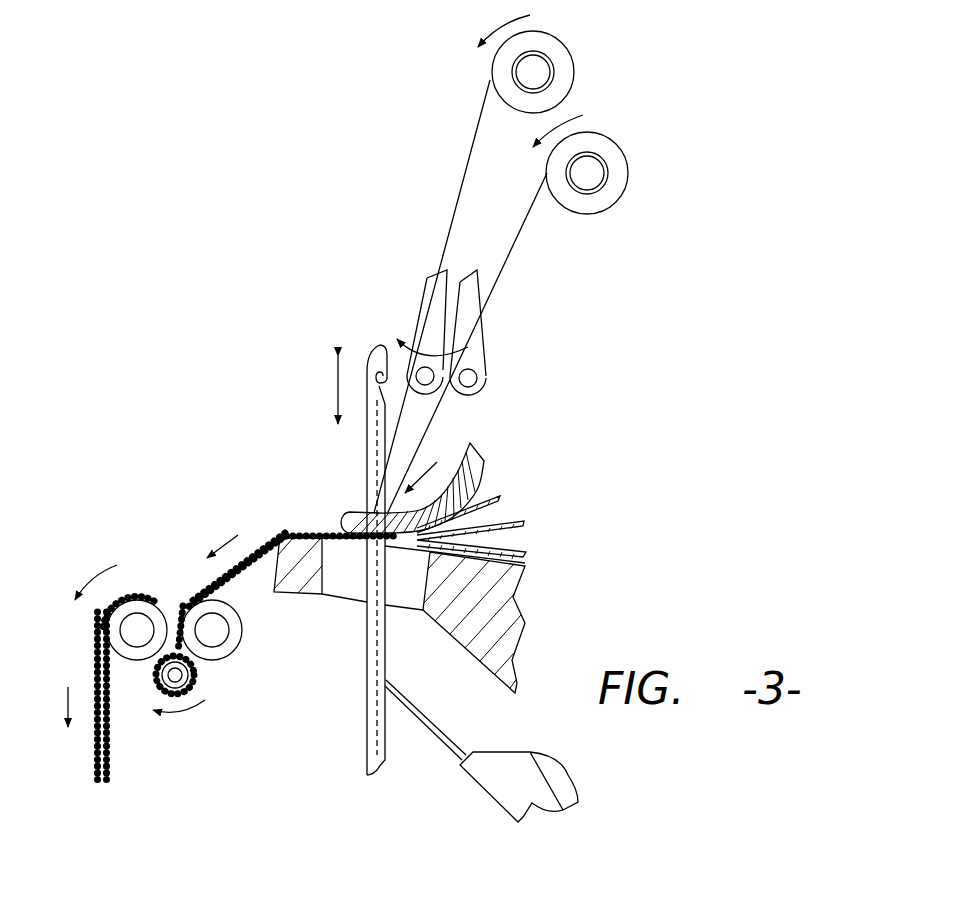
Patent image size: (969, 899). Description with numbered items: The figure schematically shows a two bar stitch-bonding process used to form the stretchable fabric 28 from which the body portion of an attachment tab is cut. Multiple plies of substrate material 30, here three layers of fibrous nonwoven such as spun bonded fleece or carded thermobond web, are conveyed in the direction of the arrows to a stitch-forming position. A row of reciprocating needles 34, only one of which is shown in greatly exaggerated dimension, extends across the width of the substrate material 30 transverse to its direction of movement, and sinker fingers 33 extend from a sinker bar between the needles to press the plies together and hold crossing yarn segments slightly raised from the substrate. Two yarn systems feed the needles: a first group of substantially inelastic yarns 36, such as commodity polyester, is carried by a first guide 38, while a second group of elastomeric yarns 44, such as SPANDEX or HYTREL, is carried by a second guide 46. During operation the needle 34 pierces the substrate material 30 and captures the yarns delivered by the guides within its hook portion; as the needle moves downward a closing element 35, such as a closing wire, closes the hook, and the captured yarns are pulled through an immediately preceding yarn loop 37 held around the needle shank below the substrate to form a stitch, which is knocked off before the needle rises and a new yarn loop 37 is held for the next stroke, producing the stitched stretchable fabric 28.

The stretchable fabric 28 is at (110, 748).
The substrate material 30 is at (502, 495).
The sinker fingers 33 is at (477, 440).
The reciprocating needles 34 is at (382, 348).
The closing element 35 is at (414, 703).
The inelastic yarns 36 is at (512, 262).
The yarn loop 37 is at (367, 553).
The first guide 38 is at (487, 370).
The elastomeric yarns 44 is at (467, 180).
The second guide 46 is at (420, 300).